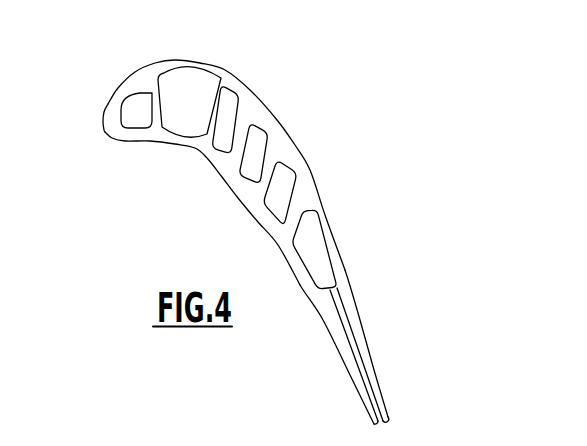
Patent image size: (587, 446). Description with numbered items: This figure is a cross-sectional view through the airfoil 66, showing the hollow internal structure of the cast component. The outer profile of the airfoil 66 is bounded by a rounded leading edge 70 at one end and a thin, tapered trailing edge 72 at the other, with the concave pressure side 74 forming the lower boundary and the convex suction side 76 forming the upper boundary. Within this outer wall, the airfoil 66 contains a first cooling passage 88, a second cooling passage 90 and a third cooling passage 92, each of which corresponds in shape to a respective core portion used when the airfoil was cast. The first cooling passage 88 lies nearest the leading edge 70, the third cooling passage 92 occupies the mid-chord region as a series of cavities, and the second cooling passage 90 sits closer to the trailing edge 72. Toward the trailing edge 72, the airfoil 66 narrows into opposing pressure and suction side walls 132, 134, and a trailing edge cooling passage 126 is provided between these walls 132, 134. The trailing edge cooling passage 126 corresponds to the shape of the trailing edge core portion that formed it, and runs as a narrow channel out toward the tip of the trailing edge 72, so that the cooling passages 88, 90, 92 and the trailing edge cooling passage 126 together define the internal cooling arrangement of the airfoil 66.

The airfoil 66 is at (255, 58).
The leading edge 70 is at (104, 132).
The trailing edge 72 is at (338, 397).
The pressure side 74 is at (197, 158).
The suction side 76 is at (203, 63).
The first cooling passage 88 is at (146, 95).
The second cooling passage 90 is at (325, 232).
The third cooling passage 92 is at (248, 108).
The trailing edge cooling passage 126 is at (355, 308).
The pressure side wall 132 is at (341, 335).
The suction side wall 134 is at (370, 372).